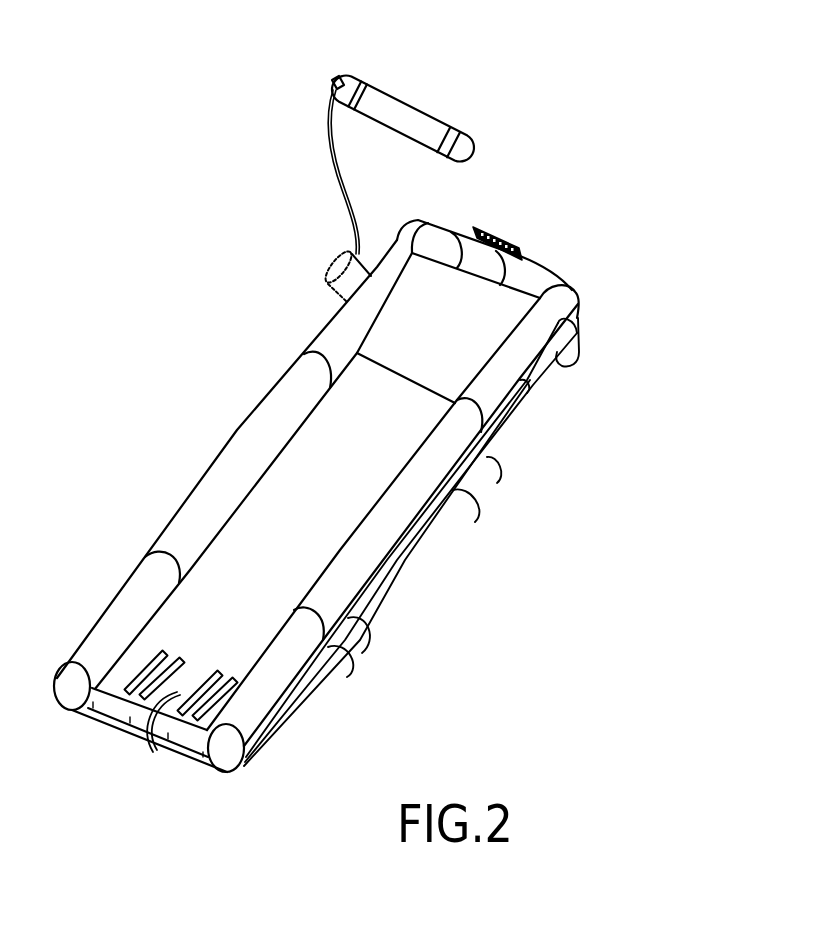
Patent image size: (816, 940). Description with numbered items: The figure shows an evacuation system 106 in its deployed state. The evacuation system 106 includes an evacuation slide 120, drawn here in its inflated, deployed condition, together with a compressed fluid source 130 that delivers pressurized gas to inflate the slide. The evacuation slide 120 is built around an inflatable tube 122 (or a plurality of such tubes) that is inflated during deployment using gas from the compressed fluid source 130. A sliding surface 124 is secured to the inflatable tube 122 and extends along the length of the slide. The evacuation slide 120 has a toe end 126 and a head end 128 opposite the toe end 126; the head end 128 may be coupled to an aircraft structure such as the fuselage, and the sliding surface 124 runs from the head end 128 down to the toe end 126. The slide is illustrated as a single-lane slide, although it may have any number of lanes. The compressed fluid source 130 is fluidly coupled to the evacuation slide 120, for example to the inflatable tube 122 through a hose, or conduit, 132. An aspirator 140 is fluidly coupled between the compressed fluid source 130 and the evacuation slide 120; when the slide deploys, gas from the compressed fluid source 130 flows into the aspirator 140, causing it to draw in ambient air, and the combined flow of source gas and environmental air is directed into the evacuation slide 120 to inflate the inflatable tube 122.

The evacuation system 106 is at (612, 99).
The evacuation slide 120 is at (560, 250).
The inflatable tube 122 is at (253, 453).
The sliding surface 124 is at (330, 499).
The toe end 126 is at (108, 723).
The head end 128 is at (460, 230).
The compressed fluid source 130 is at (415, 120).
The hose 132 is at (342, 197).
The aspirator 140 is at (338, 285).